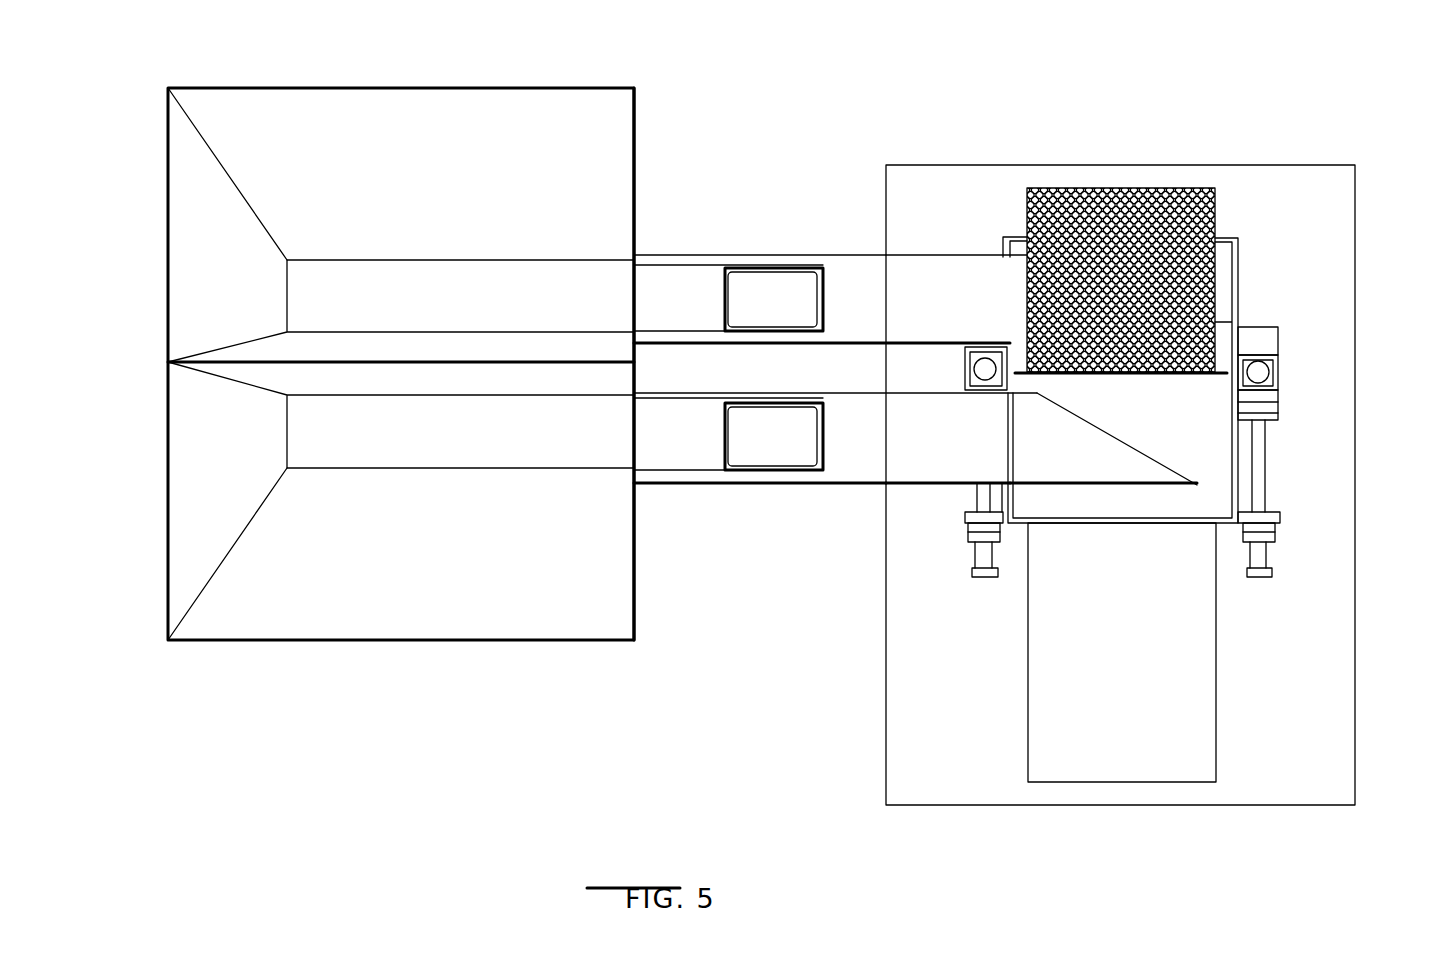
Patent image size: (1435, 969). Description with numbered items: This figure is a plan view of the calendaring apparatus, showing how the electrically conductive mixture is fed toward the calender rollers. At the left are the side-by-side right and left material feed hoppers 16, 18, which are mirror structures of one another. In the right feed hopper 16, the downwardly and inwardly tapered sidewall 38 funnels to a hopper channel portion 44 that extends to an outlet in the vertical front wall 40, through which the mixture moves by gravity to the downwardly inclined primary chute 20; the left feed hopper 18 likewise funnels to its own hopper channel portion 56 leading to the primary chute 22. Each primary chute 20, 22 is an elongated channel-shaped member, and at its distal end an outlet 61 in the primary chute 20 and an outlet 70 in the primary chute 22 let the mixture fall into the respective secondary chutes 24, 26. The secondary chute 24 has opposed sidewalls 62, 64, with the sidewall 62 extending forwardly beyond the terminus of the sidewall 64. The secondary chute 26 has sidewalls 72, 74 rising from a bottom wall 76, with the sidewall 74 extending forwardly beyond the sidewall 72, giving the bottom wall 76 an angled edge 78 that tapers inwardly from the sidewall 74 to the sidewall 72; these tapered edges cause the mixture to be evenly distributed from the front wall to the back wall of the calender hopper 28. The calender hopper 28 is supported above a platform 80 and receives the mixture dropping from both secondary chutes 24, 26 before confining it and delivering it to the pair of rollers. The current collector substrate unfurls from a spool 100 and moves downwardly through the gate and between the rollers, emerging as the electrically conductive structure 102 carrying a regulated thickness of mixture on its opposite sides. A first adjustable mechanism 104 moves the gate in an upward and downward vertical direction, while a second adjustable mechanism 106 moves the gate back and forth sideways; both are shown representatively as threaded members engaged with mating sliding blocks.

The right material feed hopper 16 is at (483, 88).
The left material feed hopper 18 is at (370, 562).
The primary chute 20 is at (681, 265).
The primary chute 22 is at (693, 472).
The secondary chute 24 is at (768, 267).
The secondary chute 26 is at (833, 483).
The calender hopper 28 is at (1240, 282).
The tapered sidewall 38 is at (210, 237).
The vertical front wall 40 is at (636, 163).
The hopper channel portion 44 is at (517, 303).
The hopper channel portion 56 is at (448, 438).
The outlet 61 is at (790, 285).
The sidewall 62 is at (985, 255).
The sidewall 64 is at (917, 343).
The outlet 70 is at (777, 447).
The sidewall 72 is at (923, 395).
The sidewall 74 is at (957, 483).
The bottom wall 76 is at (1043, 453).
The angled edge 78 is at (1130, 448).
The platform 80 is at (1273, 768).
The spool 100 is at (1130, 188).
The electrically conductive structure 102 is at (1108, 758).
The first adjustable mechanism 104 is at (958, 373).
The second adjustable mechanism 106 is at (985, 585).